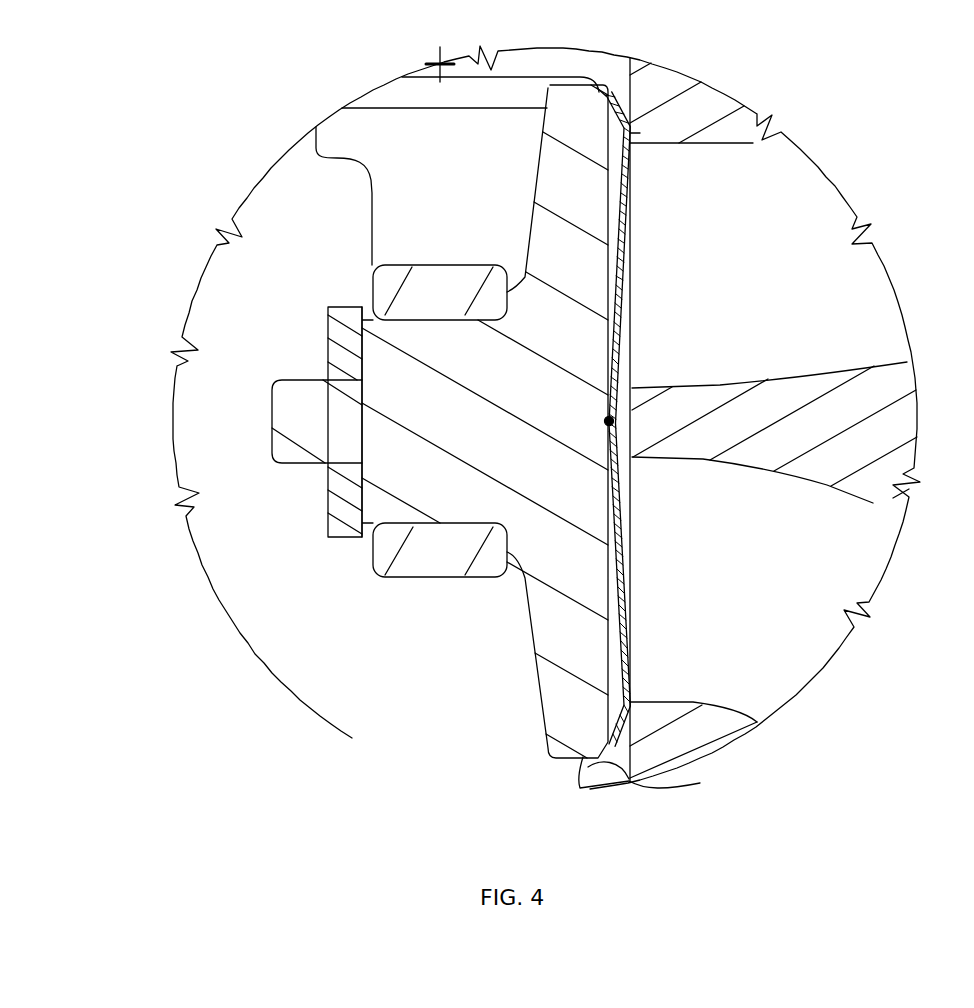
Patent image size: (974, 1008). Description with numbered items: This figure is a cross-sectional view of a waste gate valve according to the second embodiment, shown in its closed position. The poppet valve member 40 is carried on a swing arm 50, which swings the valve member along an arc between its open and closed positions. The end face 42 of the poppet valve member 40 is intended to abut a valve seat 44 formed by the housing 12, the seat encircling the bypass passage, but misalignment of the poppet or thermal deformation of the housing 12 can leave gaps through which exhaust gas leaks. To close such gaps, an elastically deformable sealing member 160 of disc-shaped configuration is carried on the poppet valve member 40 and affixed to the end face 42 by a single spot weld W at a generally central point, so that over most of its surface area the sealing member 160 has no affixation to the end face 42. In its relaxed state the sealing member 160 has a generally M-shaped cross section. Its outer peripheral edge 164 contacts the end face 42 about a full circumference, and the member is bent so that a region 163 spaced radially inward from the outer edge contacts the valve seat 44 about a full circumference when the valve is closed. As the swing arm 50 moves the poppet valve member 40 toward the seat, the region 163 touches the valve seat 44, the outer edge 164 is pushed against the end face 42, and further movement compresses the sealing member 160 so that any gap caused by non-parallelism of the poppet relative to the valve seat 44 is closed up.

The housing 12 is at (850, 408).
The poppet valve member 40 is at (550, 597).
The end face 42 is at (608, 685).
The valve seat 44 is at (700, 783).
The swing arm 50 is at (455, 212).
The sealing member 160 is at (623, 285).
The region of the sealing member 163 is at (632, 133).
The outer peripheral edge 164 is at (608, 101).
The spot weld W is at (613, 420).